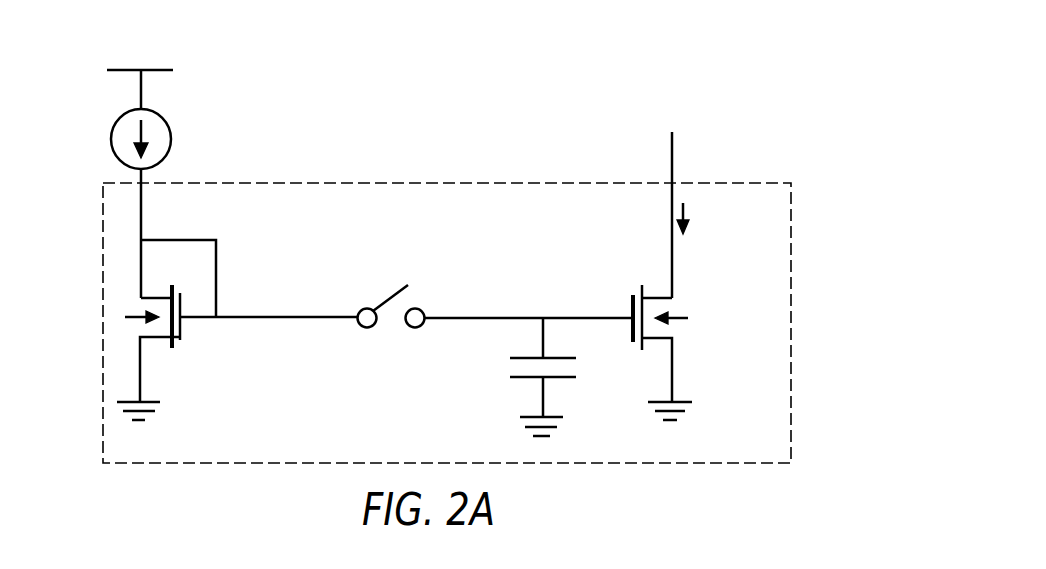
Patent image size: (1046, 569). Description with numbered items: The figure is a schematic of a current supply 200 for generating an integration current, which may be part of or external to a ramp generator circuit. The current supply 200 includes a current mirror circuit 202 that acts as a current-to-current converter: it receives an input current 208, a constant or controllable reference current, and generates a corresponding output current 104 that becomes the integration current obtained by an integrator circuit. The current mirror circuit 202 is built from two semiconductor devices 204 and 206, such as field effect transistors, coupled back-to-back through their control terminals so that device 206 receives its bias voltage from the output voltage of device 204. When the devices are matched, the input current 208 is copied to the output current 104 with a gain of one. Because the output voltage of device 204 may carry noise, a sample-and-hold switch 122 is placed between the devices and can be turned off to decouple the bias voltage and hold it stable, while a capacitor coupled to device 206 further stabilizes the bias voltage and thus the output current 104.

The current supply 200 is at (603, 52).
The current mirror circuit 202 is at (482, 443).
The semiconductor device 204 is at (183, 337).
The semiconductor device 206 is at (632, 329).
The input current 208 is at (113, 128).
The sample-and-hold switch 122 is at (366, 329).
The output current 104 is at (715, 210).